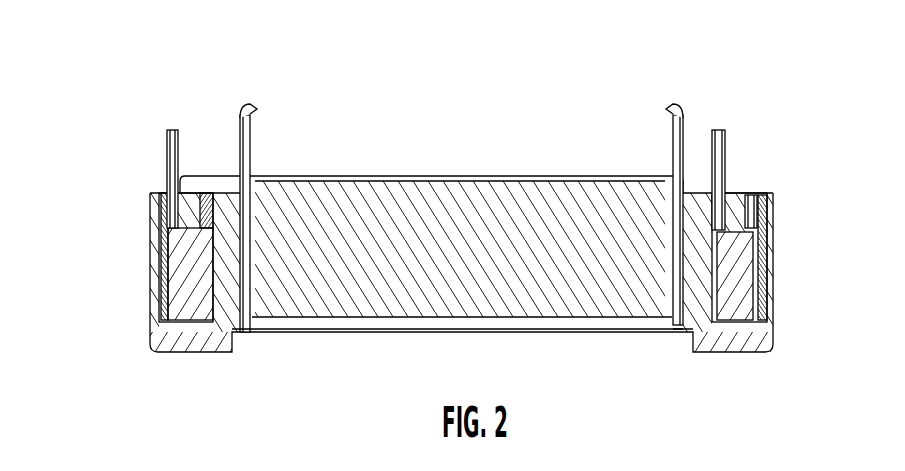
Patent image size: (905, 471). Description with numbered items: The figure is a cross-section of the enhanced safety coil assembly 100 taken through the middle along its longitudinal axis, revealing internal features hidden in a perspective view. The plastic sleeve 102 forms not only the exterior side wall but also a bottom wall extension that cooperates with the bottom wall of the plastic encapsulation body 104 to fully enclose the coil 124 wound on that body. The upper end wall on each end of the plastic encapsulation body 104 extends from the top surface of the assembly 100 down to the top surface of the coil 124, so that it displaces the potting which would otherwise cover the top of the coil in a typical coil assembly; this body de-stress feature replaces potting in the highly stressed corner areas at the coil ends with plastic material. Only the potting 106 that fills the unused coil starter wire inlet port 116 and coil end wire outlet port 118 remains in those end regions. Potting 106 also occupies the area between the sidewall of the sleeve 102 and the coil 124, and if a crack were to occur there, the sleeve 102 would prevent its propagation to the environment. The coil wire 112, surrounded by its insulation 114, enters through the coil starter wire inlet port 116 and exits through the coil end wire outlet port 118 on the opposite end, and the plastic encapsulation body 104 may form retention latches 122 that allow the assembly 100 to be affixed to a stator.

The enhanced safety coil assembly 100 is at (481, 88).
The plastic sleeve 102 is at (200, 347).
The plastic encapsulation body 104 is at (233, 321).
The potting 106 is at (160, 288).
The coil wire 112 is at (175, 130).
The insulation 114 is at (165, 158).
The coil starter wire inlet port 116 is at (213, 193).
The coil end wire outlet port 118 is at (753, 192).
The retention latches 122 is at (251, 108).
The coil 124 is at (177, 303).